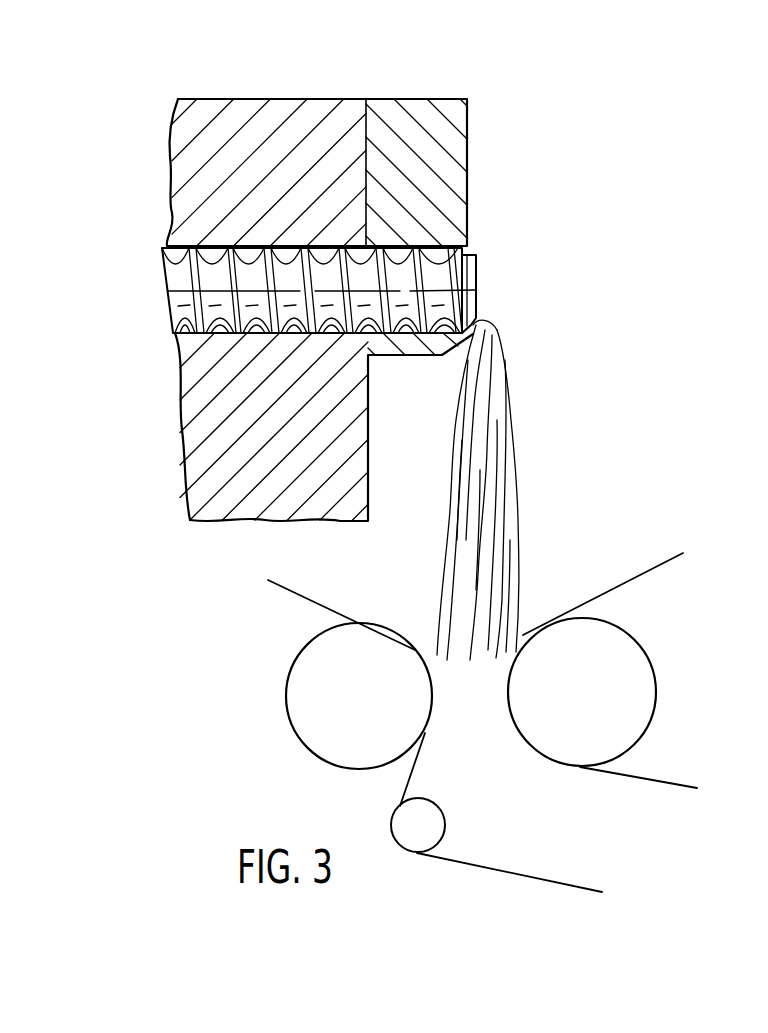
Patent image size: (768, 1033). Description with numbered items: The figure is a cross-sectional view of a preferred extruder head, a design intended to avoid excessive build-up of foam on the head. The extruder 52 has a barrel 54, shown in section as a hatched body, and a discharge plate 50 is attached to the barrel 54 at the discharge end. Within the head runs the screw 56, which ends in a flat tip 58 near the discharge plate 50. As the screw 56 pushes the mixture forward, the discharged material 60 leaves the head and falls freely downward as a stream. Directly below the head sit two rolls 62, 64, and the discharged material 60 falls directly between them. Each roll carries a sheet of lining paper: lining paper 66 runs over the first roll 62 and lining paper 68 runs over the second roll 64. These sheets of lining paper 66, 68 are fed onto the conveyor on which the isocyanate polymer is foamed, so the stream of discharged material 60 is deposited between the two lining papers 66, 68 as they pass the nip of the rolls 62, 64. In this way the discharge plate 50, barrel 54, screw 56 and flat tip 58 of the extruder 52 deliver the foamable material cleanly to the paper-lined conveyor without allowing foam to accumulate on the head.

The discharge plate 50 is at (415, 104).
The extruder 52 is at (146, 327).
The barrel 54 is at (278, 118).
The screw 56 is at (407, 356).
The flat tip 58 is at (489, 291).
The discharged material 60 is at (514, 466).
The roll 62 is at (397, 730).
The roll 64 is at (620, 723).
The lining paper 66 is at (333, 604).
The lining paper 68 is at (612, 588).